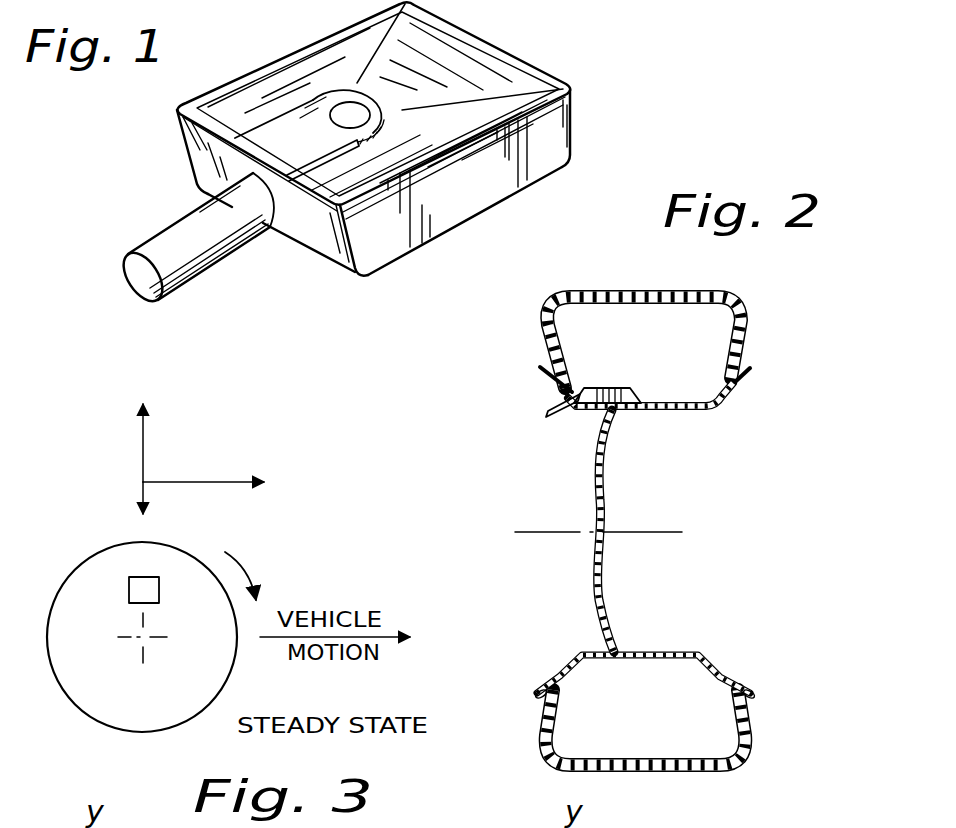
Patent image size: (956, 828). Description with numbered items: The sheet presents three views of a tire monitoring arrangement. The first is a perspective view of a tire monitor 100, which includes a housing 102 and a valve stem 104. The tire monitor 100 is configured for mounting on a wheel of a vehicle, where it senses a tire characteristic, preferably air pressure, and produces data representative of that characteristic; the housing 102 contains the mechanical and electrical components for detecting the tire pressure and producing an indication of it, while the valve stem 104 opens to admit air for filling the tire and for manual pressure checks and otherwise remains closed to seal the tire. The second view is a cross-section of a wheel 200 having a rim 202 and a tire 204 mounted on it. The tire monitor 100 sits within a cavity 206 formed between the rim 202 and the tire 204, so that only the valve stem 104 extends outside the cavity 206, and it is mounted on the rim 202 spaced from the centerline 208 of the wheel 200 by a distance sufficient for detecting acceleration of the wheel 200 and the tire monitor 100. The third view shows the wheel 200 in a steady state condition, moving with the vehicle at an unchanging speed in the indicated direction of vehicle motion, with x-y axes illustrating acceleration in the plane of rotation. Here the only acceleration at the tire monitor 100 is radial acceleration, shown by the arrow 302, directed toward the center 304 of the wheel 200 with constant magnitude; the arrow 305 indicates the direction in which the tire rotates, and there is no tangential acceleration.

In FIG. 1, the tire monitor 100 is at (338, 159).
In FIG. 2, the tire monitor 100 is at (617, 392).
In FIG. 3, the tire monitor 100 is at (128, 590).
In FIG. 1, the housing 102 is at (502, 58).
In FIG. 1, the valve stem 104 is at (163, 238).
In FIG. 2, the valve stem 104 is at (545, 401).
In FIG. 2, the wheel 200 is at (683, 515).
In FIG. 3, the wheel 200 is at (103, 726).
In FIG. 2, the rim 202 is at (746, 386).
In FIG. 2, the tire 204 is at (748, 330).
In FIG. 2, the cavity 206 is at (736, 292).
In FIG. 2, the centerline 208 is at (682, 532).
In FIG. 3, the arrow 302 is at (138, 485).
In FIG. 3, the center 304 is at (141, 640).
In FIG. 3, the arrow 305 is at (252, 572).